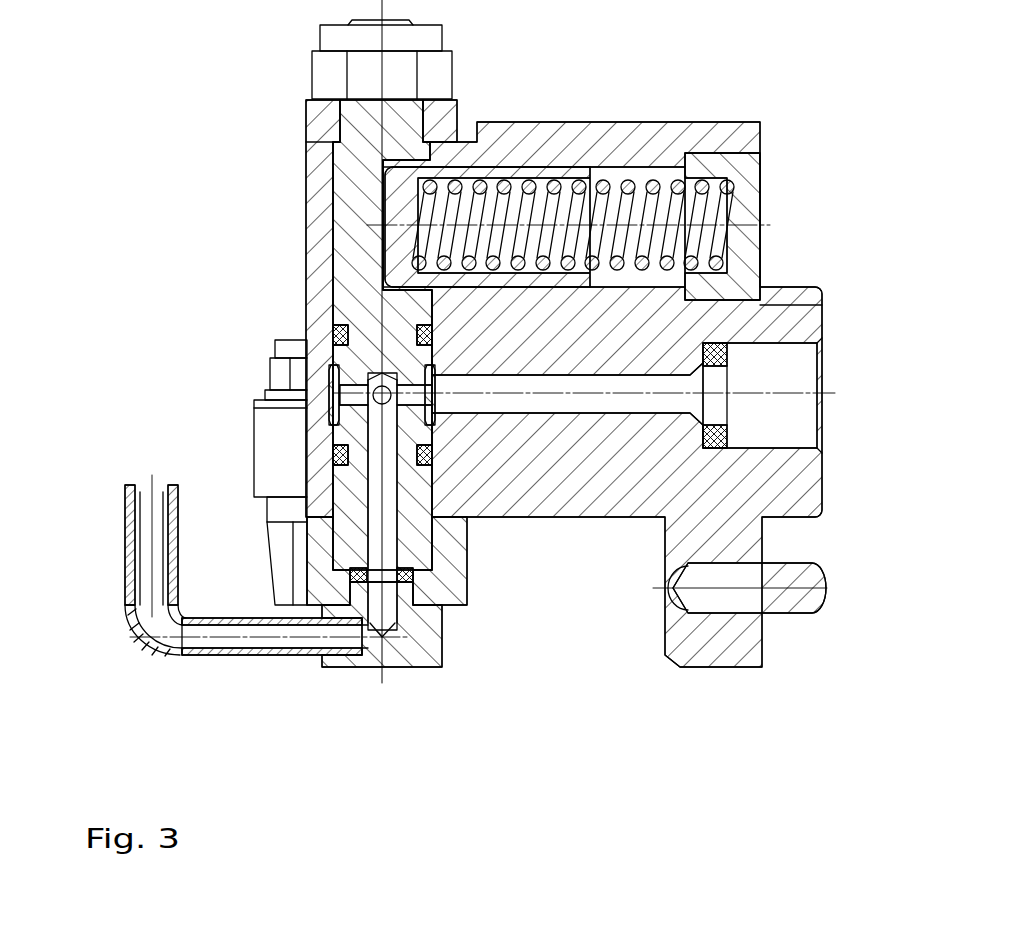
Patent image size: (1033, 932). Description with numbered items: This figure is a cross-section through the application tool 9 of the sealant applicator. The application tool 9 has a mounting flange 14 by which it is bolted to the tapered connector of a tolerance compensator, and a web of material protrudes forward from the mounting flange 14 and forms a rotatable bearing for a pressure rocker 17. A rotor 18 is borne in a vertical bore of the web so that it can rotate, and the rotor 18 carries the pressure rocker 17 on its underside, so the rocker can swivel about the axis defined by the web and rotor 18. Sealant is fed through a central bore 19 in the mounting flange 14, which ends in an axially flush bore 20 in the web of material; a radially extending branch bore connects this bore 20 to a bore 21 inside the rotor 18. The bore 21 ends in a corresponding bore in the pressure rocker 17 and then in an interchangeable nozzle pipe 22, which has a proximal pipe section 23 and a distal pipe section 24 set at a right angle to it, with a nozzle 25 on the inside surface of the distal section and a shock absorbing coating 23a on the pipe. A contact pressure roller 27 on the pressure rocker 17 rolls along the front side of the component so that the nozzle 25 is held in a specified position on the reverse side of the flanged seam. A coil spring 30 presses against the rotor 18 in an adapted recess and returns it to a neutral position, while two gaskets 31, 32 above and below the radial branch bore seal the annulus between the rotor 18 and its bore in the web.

The application tool 9 is at (236, 218).
The mounting flange 14 is at (665, 643).
The pressure rocker 17 is at (442, 665).
The rotor 18 is at (467, 598).
The central bore 19 is at (795, 422).
The bore 20 is at (505, 403).
The bore 21 is at (388, 528).
The nozzle pipe 22 is at (193, 672).
The proximal pipe section 23 is at (130, 528).
The shock absorbing coating 23a is at (126, 572).
The distal pipe section 24 is at (270, 660).
The nozzle 25 is at (165, 540).
The contact pressure roller 27 is at (254, 470).
The coil spring 30 is at (608, 183).
The gasket 31 is at (333, 334).
The gasket 32 is at (333, 455).